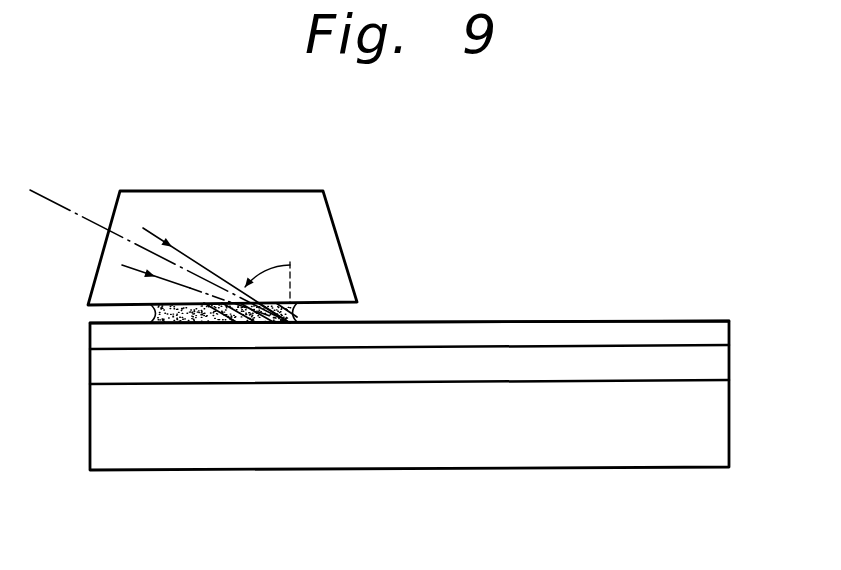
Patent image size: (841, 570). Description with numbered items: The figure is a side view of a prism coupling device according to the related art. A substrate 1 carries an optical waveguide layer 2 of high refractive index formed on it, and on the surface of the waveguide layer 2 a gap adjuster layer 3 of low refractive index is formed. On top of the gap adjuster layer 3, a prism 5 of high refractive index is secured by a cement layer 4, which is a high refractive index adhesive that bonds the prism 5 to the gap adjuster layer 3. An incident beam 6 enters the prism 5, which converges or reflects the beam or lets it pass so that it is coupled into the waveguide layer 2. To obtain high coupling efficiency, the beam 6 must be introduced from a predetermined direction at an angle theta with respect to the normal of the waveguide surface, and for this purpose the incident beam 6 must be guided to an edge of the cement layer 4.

The substrate 1 is at (550, 447).
The optical waveguide layer 2 is at (707, 362).
The gap adjuster layer 3 is at (538, 332).
The cement layer 4 is at (150, 310).
The prism 5 is at (260, 200).
The incident beam 6 is at (45, 194).